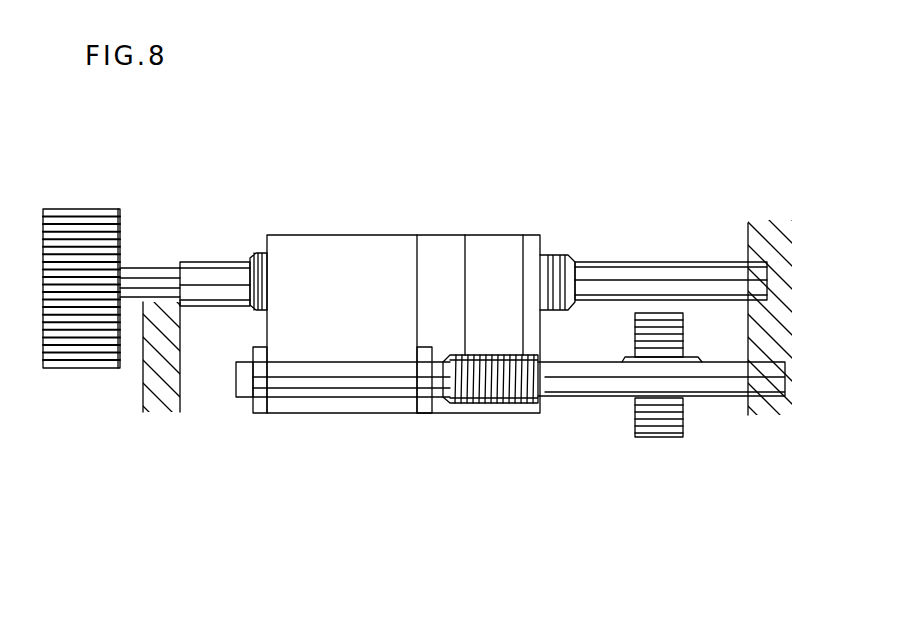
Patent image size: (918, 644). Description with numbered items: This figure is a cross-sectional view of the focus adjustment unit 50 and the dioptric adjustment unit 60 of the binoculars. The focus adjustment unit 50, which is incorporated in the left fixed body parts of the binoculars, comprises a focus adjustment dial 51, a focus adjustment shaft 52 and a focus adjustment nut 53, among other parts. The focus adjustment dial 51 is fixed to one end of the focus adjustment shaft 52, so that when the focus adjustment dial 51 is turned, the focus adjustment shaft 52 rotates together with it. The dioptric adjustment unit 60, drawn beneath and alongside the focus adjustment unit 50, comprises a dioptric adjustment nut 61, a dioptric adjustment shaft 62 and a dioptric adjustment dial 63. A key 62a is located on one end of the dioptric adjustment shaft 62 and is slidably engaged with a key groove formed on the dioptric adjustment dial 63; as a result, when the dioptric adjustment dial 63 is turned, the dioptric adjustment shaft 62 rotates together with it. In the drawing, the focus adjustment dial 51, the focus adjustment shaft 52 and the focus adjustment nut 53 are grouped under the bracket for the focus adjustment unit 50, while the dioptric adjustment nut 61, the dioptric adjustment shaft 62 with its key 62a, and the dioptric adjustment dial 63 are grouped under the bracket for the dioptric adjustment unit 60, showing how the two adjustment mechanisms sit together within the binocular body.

The focus adjustment unit 50 is at (372, 140).
The focus adjustment dial 51 is at (97, 235).
The focus adjustment shaft 52 is at (205, 270).
The focus adjustment nut 53 is at (333, 263).
The dioptric adjustment unit 60 is at (678, 492).
The dioptric adjustment nut 61 is at (500, 333).
The dioptric adjustment shaft 62 is at (577, 385).
The key 62a is at (688, 358).
The dioptric adjustment dial 63 is at (662, 413).